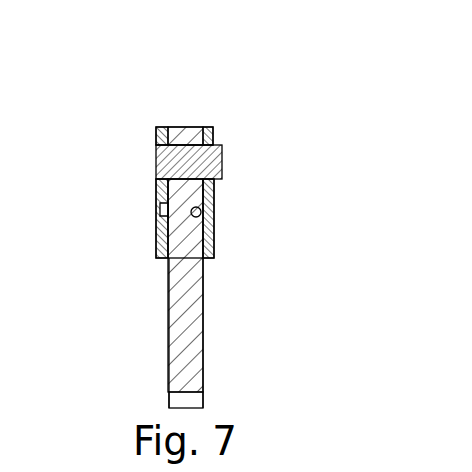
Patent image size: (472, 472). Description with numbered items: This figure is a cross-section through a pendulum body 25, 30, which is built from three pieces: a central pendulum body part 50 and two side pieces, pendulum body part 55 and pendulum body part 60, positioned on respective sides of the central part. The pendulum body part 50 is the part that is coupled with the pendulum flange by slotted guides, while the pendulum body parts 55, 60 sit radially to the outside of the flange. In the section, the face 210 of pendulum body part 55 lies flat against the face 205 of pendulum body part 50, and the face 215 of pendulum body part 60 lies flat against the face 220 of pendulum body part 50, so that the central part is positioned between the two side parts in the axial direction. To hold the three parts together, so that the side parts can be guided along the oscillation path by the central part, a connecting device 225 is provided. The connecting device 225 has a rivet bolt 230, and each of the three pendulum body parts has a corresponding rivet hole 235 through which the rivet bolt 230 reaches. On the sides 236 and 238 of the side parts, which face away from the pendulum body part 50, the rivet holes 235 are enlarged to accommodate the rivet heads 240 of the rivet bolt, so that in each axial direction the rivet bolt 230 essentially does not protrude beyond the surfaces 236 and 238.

The pendulum body 25 is at (193, 75).
The pendulum body 30 is at (199, 232).
The pendulum body part 50 is at (198, 330).
The pendulum body part 55 is at (155, 207).
The pendulum body part 60 is at (214, 200).
The face 205 is at (169, 362).
The face 210 is at (157, 243).
The face 215 is at (215, 250).
The face 220 is at (203, 363).
The connecting device 225 is at (222, 128).
The rivet bolt 230 is at (223, 150).
The rivet hole 235 is at (223, 166).
The side 236 is at (155, 192).
The side 238 is at (214, 222).
The rivet head 240 is at (155, 143).